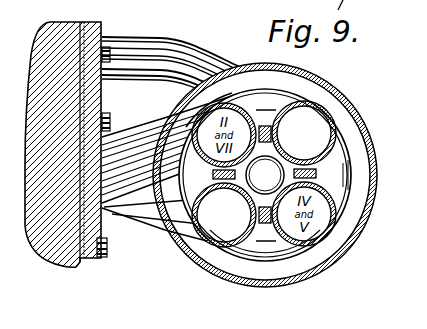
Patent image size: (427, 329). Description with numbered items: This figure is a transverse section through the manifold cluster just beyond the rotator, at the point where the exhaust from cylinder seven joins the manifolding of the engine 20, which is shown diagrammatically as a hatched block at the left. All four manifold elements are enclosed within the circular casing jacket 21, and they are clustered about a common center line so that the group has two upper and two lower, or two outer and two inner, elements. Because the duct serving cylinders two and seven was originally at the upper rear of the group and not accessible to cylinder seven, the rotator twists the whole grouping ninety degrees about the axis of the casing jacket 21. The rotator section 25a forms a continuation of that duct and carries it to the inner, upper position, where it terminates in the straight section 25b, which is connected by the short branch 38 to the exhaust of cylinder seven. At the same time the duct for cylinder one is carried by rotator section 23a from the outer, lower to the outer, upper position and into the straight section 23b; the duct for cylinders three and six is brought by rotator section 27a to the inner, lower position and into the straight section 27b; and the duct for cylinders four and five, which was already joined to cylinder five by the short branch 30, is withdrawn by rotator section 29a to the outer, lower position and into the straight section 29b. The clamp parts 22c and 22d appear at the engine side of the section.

The engine 20 is at (56, 258).
The casing jacket 21 is at (288, 285).
The clamp screw 22c is at (94, 221).
The clamp screw 22d is at (68, 283).
The rotator section 23a is at (356, 193).
The straight section 23b is at (323, 101).
The rotator section 25a is at (281, 88).
The straight section 25b is at (237, 97).
The rotator section 27a is at (164, 228).
The straight section 27b is at (216, 248).
The rotator section 29a is at (256, 260).
The straight section 29b is at (318, 252).
The short branch 30 is at (136, 223).
The short branch 38 is at (148, 122).